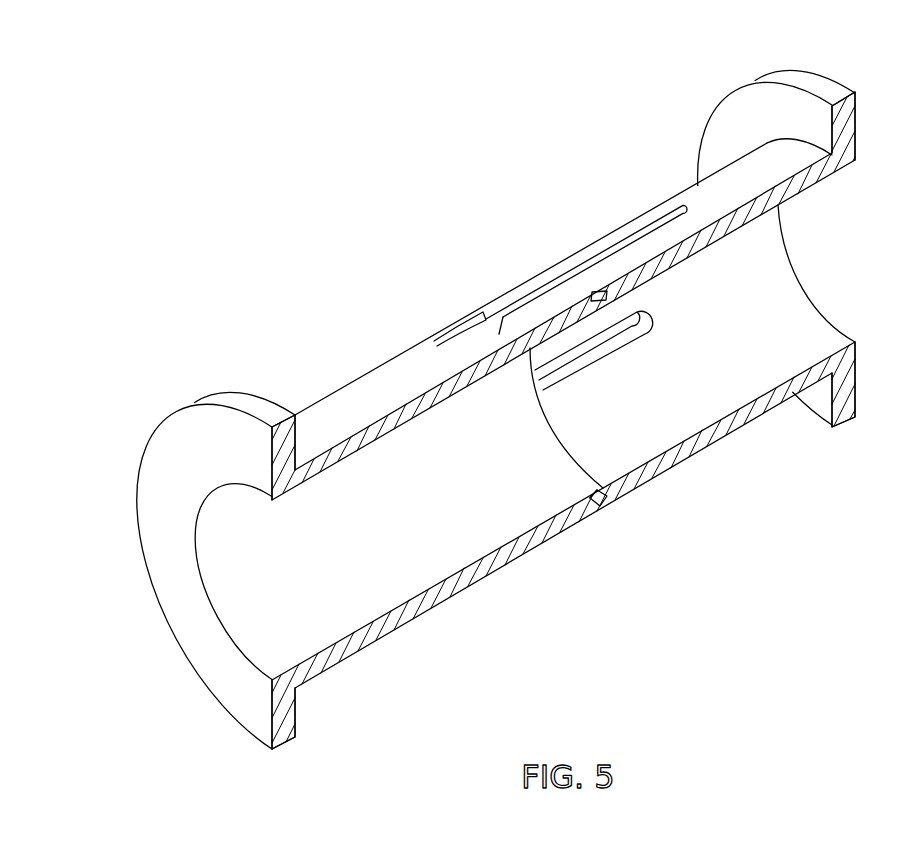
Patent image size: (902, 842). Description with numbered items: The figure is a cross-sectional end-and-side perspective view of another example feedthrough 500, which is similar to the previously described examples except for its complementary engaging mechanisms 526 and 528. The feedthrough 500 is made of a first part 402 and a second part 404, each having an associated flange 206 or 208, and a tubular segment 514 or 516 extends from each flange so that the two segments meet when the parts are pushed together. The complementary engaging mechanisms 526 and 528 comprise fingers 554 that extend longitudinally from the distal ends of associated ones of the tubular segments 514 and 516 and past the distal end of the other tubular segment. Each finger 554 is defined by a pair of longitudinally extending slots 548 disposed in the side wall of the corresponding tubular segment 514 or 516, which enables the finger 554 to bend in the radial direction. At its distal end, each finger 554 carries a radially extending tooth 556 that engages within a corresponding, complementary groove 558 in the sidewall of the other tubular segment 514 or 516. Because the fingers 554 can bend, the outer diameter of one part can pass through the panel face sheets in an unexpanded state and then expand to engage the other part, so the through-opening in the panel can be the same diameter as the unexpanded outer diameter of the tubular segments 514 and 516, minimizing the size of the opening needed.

The feedthrough 500 is at (516, 383).
The flange 206 is at (784, 239).
The flange 208 is at (233, 405).
The first part 402 is at (730, 190).
The second part 404 is at (362, 400).
The tubular segment 514 is at (803, 350).
The tubular segment 516 is at (328, 633).
The complementary engaging mechanism 526 is at (586, 225).
The complementary engaging mechanism 528 is at (627, 479).
The longitudinally extending slot 548 is at (602, 342).
The finger 554 is at (600, 270).
The radially extending tooth 556 is at (492, 308).
The groove 558 is at (592, 295).